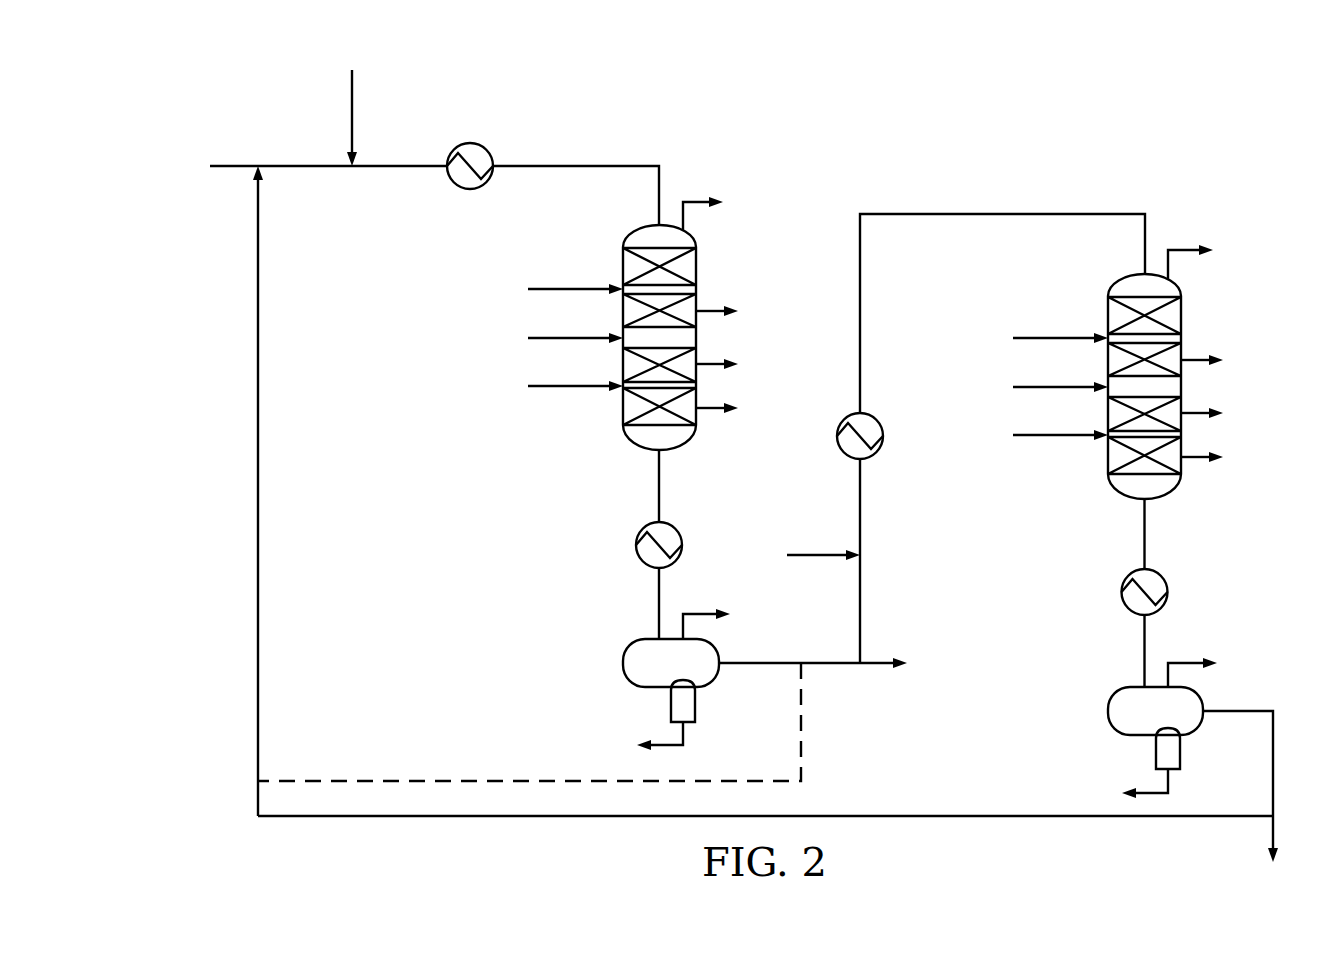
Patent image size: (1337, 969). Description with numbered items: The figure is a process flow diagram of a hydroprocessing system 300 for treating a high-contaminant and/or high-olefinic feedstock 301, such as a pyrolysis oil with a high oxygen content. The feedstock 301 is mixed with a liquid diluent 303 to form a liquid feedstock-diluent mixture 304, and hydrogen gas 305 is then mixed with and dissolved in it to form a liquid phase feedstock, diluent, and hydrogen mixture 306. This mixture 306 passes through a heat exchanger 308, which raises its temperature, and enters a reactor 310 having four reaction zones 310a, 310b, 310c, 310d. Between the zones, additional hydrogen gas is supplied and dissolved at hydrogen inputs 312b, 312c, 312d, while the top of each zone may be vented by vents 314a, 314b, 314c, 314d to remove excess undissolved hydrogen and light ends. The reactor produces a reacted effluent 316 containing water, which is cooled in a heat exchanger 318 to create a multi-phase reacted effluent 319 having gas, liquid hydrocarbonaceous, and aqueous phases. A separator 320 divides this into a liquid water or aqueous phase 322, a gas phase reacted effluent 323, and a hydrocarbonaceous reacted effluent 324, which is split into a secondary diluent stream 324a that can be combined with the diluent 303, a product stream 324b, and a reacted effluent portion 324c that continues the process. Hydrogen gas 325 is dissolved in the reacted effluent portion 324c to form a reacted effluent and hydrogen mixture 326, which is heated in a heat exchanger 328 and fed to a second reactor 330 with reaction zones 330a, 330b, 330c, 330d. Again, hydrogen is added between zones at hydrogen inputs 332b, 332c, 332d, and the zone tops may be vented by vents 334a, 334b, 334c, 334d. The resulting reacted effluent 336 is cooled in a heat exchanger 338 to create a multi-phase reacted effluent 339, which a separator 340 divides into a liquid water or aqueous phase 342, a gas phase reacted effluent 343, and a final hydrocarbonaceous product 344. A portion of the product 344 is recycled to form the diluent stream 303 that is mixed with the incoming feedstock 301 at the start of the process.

The hydroprocessing system 300 is at (1006, 183).
The high-contaminant and/or high-olefinic feedstock 301 is at (240, 164).
The liquid diluent 303 is at (628, 818).
The liquid feedstock-diluent mixture 304 is at (322, 164).
The hydrogen gas 305 is at (350, 100).
The feedstock, diluent, and hydrogen mixture 306 is at (414, 164).
The heat exchanger 308 is at (466, 143).
The reactor 310 is at (614, 312).
The reaction zone 310a is at (623, 265).
The reaction zone 310b is at (623, 321).
The reaction zone 310c is at (623, 368).
The reaction zone 310d is at (623, 410).
The hydrogen input 312b is at (528, 289).
The hydrogen input 312c is at (528, 338).
The hydrogen input 312d is at (528, 386).
The vent 314a is at (700, 201).
The vent 314b is at (712, 303).
The vent 314c is at (712, 355).
The vent 314d is at (712, 399).
The reacted effluent 316 is at (657, 484).
The heat exchanger 318 is at (674, 528).
The multi-phase reacted effluent 319 is at (657, 604).
The separator 320 is at (623, 672).
The liquid water or aqueous phase 322 is at (686, 738).
The gas phase reacted effluent 323 is at (700, 612).
The hydrocarbonaceous reacted effluent 324 is at (766, 666).
The secondary diluent stream 324a is at (803, 754).
The product stream 324b is at (870, 666).
The reacted effluent portion 324c is at (862, 606).
The hydrogen gas 325 is at (820, 560).
The reacted effluent and hydrogen mixture 326 is at (862, 510).
The heat exchanger 328 is at (839, 458).
The reactor 330 is at (1098, 361).
The reaction zone 330a is at (1108, 313).
The reaction zone 330b is at (1108, 368).
The reaction zone 330c is at (1108, 418).
The reaction zone 330d is at (1108, 458).
The hydrogen input 332b is at (1013, 338).
The hydrogen input 332c is at (1013, 387).
The hydrogen input 332d is at (1013, 435).
The vent 334a is at (1186, 249).
The vent 334b is at (1197, 351).
The vent 334c is at (1197, 404).
The vent 334d is at (1197, 448).
The reacted effluent 336 is at (1142, 532).
The heat exchanger 338 is at (1160, 576).
The multi-phase reacted effluent 339 is at (1142, 652).
The separator 340 is at (1108, 720).
The liquid water or aqueous phase 342 is at (1171, 786).
The gas phase reacted effluent 343 is at (1186, 660).
The final hydrocarbonaceous product 344 is at (1240, 710).